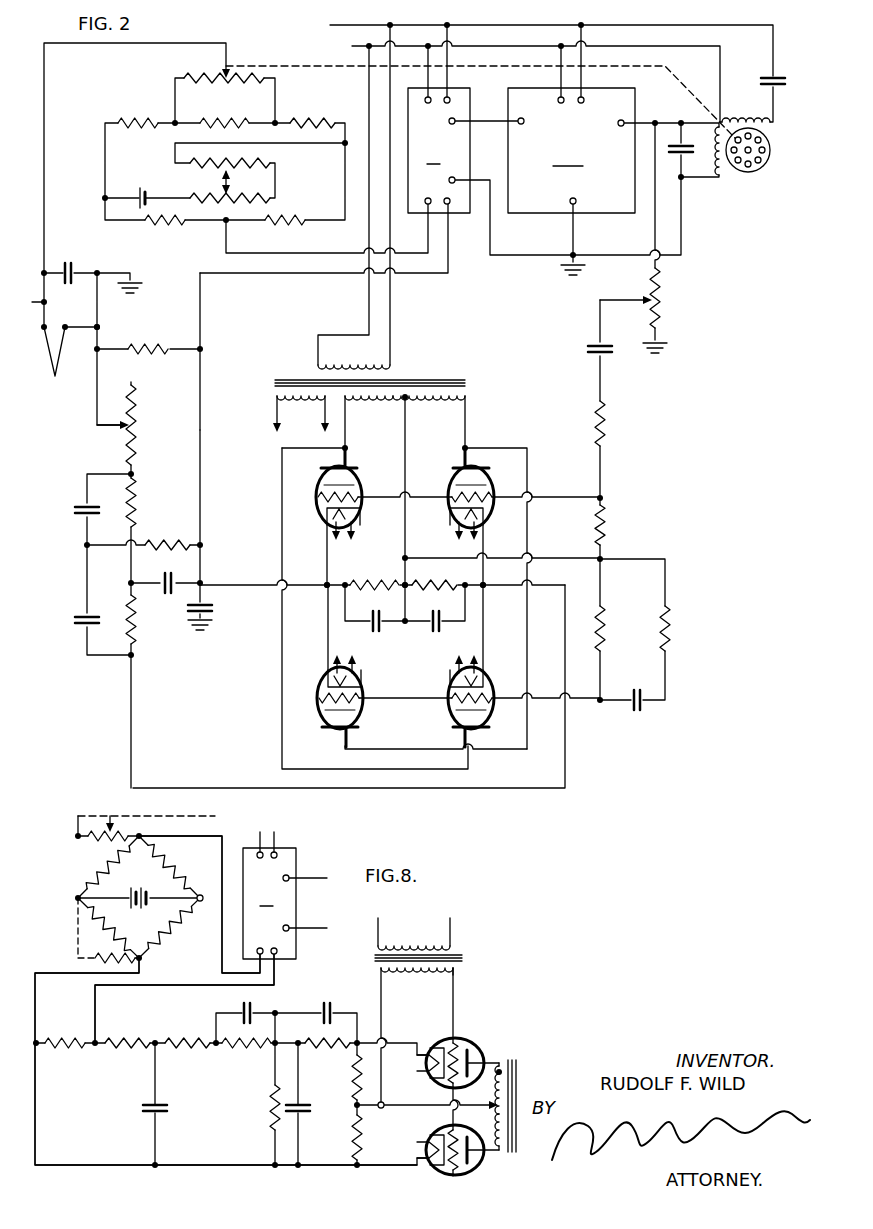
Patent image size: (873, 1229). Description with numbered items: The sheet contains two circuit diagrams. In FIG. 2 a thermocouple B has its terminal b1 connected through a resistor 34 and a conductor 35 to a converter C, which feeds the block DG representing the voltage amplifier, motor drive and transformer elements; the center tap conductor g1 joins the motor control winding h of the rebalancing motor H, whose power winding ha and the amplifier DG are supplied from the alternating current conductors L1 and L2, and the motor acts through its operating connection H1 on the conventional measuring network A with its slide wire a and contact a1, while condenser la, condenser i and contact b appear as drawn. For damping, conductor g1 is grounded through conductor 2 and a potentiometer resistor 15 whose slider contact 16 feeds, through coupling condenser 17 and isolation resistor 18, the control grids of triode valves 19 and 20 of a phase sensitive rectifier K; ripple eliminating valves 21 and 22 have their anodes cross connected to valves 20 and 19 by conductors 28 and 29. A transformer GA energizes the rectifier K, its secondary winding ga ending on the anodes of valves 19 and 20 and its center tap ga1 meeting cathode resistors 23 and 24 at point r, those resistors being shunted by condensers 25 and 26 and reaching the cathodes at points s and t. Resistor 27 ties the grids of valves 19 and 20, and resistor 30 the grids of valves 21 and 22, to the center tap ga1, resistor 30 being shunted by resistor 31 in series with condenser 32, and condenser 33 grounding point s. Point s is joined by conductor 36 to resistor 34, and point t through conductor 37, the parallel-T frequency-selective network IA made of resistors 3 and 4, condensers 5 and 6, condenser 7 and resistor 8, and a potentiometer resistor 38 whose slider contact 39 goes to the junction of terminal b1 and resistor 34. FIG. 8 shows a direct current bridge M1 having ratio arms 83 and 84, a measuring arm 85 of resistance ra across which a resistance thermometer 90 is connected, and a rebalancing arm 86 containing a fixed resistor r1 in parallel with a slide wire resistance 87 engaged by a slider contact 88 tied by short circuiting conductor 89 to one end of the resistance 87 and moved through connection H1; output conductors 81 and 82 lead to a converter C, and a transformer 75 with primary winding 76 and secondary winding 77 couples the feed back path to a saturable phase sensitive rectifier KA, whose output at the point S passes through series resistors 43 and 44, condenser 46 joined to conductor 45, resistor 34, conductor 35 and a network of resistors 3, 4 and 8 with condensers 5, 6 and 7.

In FIG. 2, the conductor 2 is at (646, 242).
In FIG. 2, the resistor 3 is at (136, 624).
In FIG. 8, the resistor 3 is at (333, 1048).
In FIG. 2, the resistor 4 is at (135, 512).
In FIG. 8, the resistor 4 is at (243, 1048).
In FIG. 2, the condenser 5 is at (72, 614).
In FIG. 8, the condenser 5 is at (330, 1010).
In FIG. 2, the condenser 6 is at (72, 504).
In FIG. 8, the condenser 6 is at (250, 1010).
In FIG. 2, the condenser 7 is at (164, 596).
In FIG. 8, the condenser 7 is at (310, 1109).
In FIG. 2, the resistor 8 is at (172, 542).
In FIG. 8, the resistor 8 is at (270, 1118).
In FIG. 2, the potentiometer resistor 15 is at (657, 300).
In FIG. 2, the slider contact 16 is at (643, 300).
In FIG. 2, the coupling condenser 17 is at (587, 349).
In FIG. 2, the isolation resistor 18 is at (596, 420).
In FIG. 2, the triode valve 19 is at (323, 482).
In FIG. 8, the triode valve 19 is at (468, 1034).
In FIG. 2, the triode valve 20 is at (490, 488).
In FIG. 8, the triode valve 20 is at (478, 1164).
In FIG. 2, the ripple eliminating valve 21 is at (322, 695).
In FIG. 2, the ripple eliminating valve 22 is at (485, 718).
In FIG. 2, the cathode resistor 23 is at (378, 578).
In FIG. 2, the cathode resistor 24 is at (455, 582).
In FIG. 2, the condenser 25 is at (378, 632).
In FIG. 2, the condenser 26 is at (440, 632).
In FIG. 2, the resistor 27 is at (604, 526).
In FIG. 2, the conductor 28 is at (420, 748).
In FIG. 2, the conductor 29 is at (282, 759).
In FIG. 2, the resistor 30 is at (602, 632).
In FIG. 2, the resistor 31 is at (669, 632).
In FIG. 2, the condenser 32 is at (642, 708).
In FIG. 2, the condenser 33 is at (216, 604).
In FIG. 2, the resistor 34 is at (162, 346).
In FIG. 8, the resistor 34 is at (68, 1054).
In FIG. 2, the conductor 35 is at (200, 312).
In FIG. 8, the conductor 35 is at (95, 1000).
In FIG. 2, the conductor 36 is at (200, 441).
In FIG. 2, the conductor 37 is at (406, 788).
In FIG. 2, the potentiometer resistor 38 is at (136, 420).
In FIG. 2, the slider contact 39 is at (124, 431).
In FIG. 8, the resistor 43 is at (192, 1048).
In FIG. 8, the resistor 44 is at (127, 1054).
In FIG. 8, the conductor 45 is at (194, 1165).
In FIG. 8, the condenser 46 is at (169, 1109).
In FIG. 8, the transformer 75 is at (464, 954).
In FIG. 8, the transformer primary winding 76 is at (420, 944).
In FIG. 8, the transformer secondary winding 77 is at (440, 976).
In FIG. 8, the output terminal conductor 81 is at (72, 976).
In FIG. 8, the output terminal 82 is at (220, 836).
In FIG. 8, the ratio arm 83 is at (182, 914).
In FIG. 8, the ratio arm 84 is at (190, 890).
In FIG. 8, the measuring arm 85 is at (124, 954).
In FIG. 8, the rebalancing arm 86 is at (132, 888).
In FIG. 8, the adjustable resistance 87 is at (112, 852).
In FIG. 8, the slider contact 88 is at (116, 828).
In FIG. 8, the short circuiting conductor 89 is at (95, 816).
In FIG. 8, the resistance thermometer 90 is at (105, 958).
In FIG. 2, the measuring network A is at (152, 94).
In FIG. 2, the slide-wire potentiometer a is at (222, 74).
In FIG. 2, the contact a1 is at (228, 222).
In FIG. 2, the thermocouple B is at (48, 368).
In FIG. 2, the contact b is at (32, 301).
In FIG. 2, the thermocouple terminal b1 is at (88, 338).
In FIG. 2, the converter C is at (463, 150).
In FIG. 8, the converter C is at (285, 895).
In FIG. 2, the voltage amplifier, motor drive and transformer elements DG is at (571, 150).
In FIG. 2, the transformer GA is at (282, 372).
In FIG. 2, the rebalancing motor H is at (760, 182).
In FIG. 2, the operating connection H1 is at (358, 68).
In FIG. 8, the operating connection H1 is at (192, 816).
In FIG. 2, the parallel-T RC frequency-selective network IA is at (66, 488).
In FIG. 2, the phase sensitive rectifier K is at (416, 468).
In FIG. 8, the phase sensitive rectifier KA is at (486, 1038).
In FIG. 2, the alternating current supply conductor L1 is at (330, 25).
In FIG. 2, the alternating current supply conductor L2 is at (330, 46).
In FIG. 8, the D. C. bridge M1 is at (71, 890).
In FIG. 8, the junction point S is at (357, 1043).
In FIG. 2, the secondary winding ga is at (411, 400).
In FIG. 8, the secondary winding ga is at (500, 1072).
In FIG. 2, the center tap terminal ga1 is at (402, 438).
In FIG. 8, the center tap terminal ga1 is at (498, 1106).
In FIG. 2, the center tap conductor g1 is at (642, 122).
In FIG. 2, the motor control winding h is at (712, 150).
In FIG. 2, the power winding ha is at (754, 116).
In FIG. 2, the capacitor i is at (665, 152).
In FIG. 2, the capacitor la is at (758, 82).
In FIG. 2, the point r is at (406, 588).
In FIG. 8, the point r is at (359, 1107).
In FIG. 8, the fixed resistor r1 is at (116, 860).
In FIG. 8, the resistance ra is at (88, 918).
In FIG. 2, the point s is at (324, 583).
In FIG. 2, the point t is at (484, 586).
In FIG. 8, the point t is at (362, 1164).